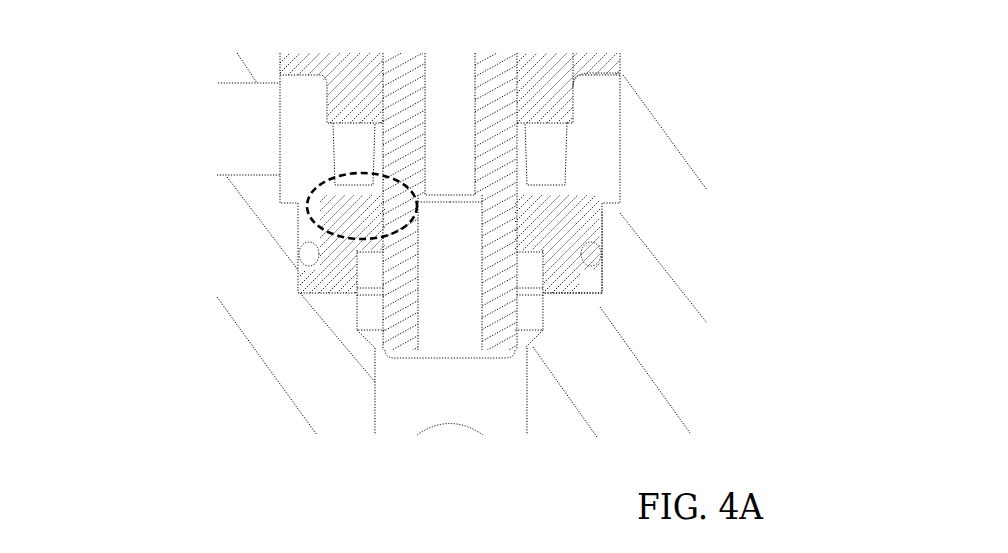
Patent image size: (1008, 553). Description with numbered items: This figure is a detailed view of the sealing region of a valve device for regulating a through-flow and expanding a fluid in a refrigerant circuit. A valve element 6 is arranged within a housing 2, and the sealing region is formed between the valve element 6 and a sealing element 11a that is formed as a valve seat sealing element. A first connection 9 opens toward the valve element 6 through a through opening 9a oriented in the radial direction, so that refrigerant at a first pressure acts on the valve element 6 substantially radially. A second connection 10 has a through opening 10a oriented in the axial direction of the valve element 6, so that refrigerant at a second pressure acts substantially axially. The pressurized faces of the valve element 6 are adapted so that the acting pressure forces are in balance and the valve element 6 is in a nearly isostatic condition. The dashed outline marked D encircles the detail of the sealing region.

The housing 2 is at (669, 335).
The valve element 6 is at (445, 107).
The first connection 9 is at (194, 161).
The through opening of the first connection 9a is at (242, 135).
The second connection 10 is at (430, 420).
The through opening of the second connection 10a is at (413, 400).
The sealing element 11a is at (572, 213).
The detail region D is at (312, 221).